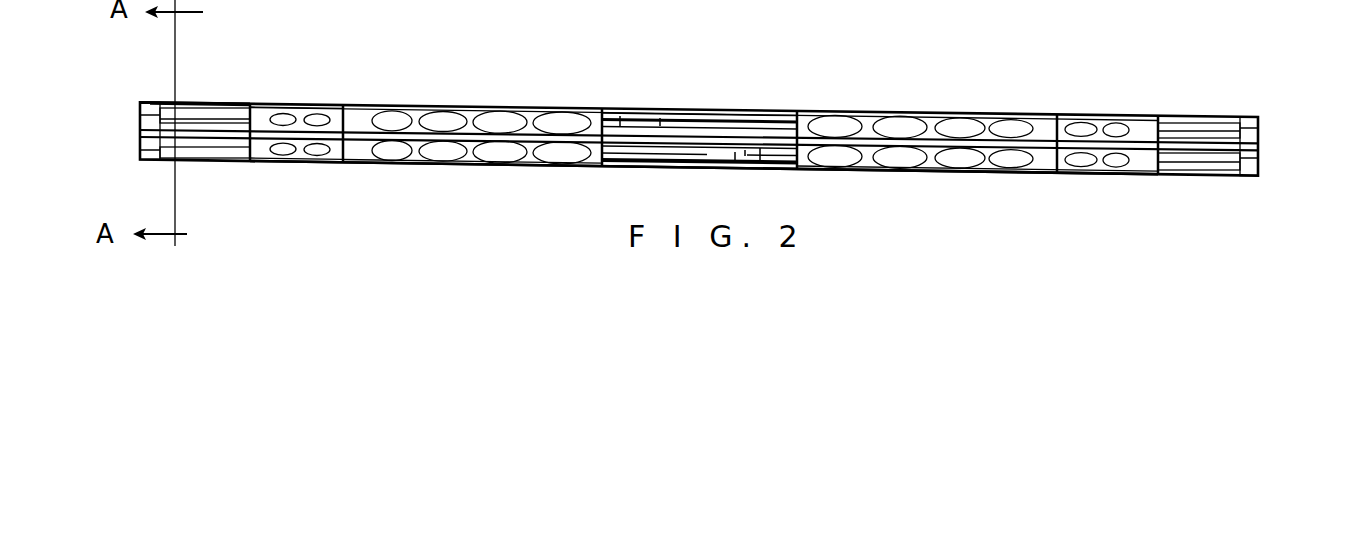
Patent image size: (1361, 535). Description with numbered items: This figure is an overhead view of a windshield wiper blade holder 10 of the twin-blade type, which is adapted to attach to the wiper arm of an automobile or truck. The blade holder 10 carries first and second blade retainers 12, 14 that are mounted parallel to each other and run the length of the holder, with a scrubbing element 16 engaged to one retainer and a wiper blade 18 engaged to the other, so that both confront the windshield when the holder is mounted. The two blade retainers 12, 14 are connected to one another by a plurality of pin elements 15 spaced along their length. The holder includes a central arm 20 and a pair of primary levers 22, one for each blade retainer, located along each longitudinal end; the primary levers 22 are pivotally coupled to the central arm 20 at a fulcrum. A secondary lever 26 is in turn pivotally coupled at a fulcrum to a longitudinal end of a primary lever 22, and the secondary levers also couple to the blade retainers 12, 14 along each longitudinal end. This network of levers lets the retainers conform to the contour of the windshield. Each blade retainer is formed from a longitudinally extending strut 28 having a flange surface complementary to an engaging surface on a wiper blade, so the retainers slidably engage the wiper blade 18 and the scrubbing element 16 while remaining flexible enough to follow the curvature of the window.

The windshield wiper blade holder 10 is at (713, 108).
The first blade retainer 12 is at (1220, 127).
The second blade retainer 14 is at (1208, 176).
The pin elements 15 is at (258, 174).
The scrubbing element 16 is at (170, 100).
The wiper blade 18 is at (156, 162).
The central arm 20 is at (481, 104).
The primary levers 22 is at (287, 103).
The secondary lever 26 is at (192, 108).
The longitudinally extending strut 28 is at (142, 130).